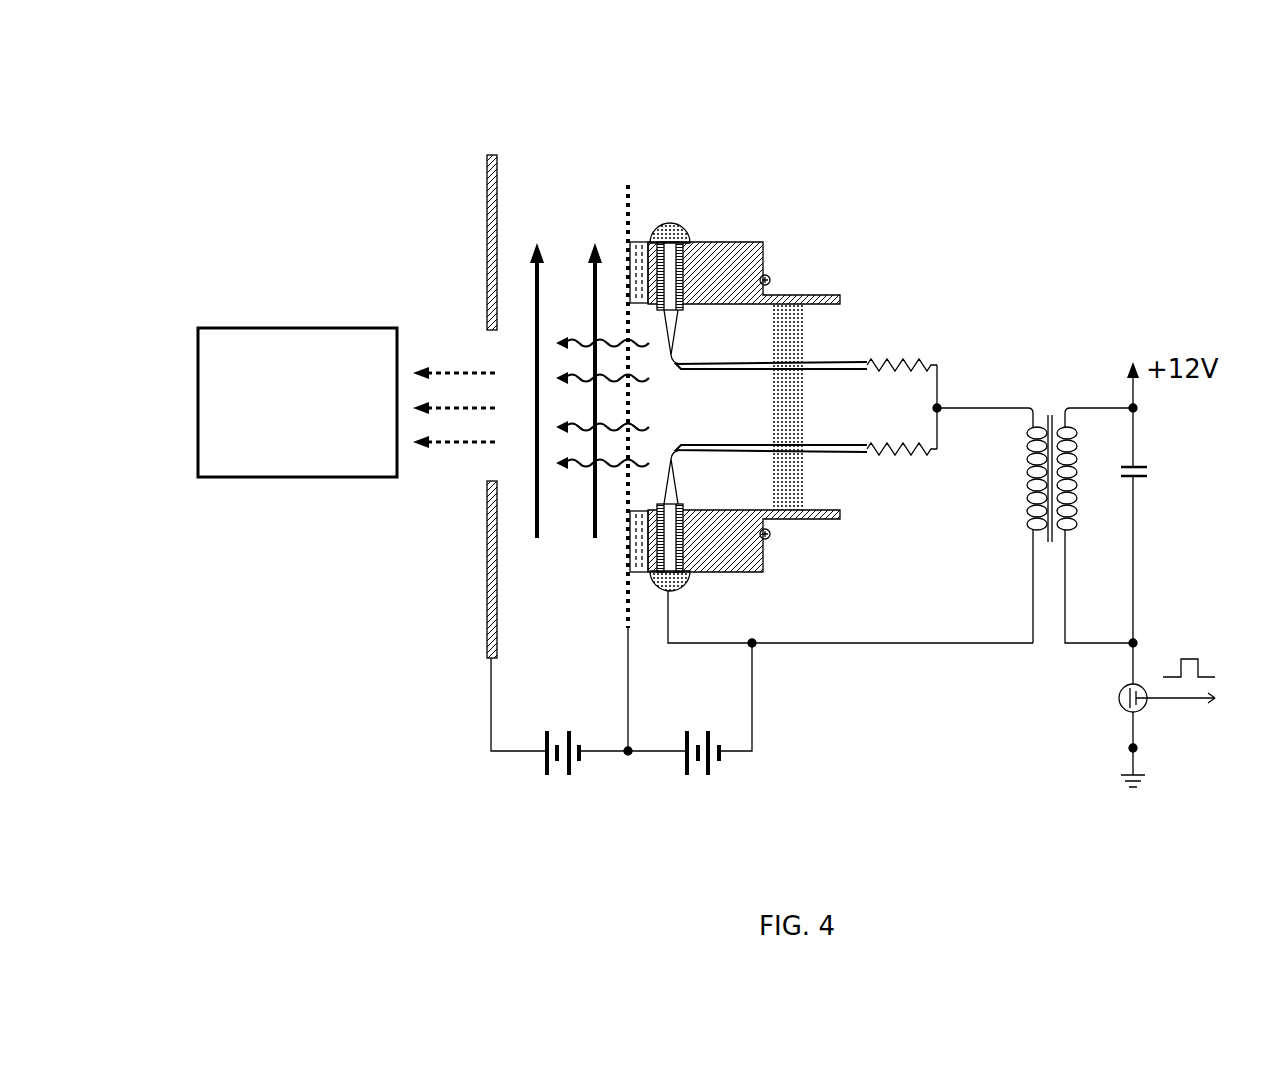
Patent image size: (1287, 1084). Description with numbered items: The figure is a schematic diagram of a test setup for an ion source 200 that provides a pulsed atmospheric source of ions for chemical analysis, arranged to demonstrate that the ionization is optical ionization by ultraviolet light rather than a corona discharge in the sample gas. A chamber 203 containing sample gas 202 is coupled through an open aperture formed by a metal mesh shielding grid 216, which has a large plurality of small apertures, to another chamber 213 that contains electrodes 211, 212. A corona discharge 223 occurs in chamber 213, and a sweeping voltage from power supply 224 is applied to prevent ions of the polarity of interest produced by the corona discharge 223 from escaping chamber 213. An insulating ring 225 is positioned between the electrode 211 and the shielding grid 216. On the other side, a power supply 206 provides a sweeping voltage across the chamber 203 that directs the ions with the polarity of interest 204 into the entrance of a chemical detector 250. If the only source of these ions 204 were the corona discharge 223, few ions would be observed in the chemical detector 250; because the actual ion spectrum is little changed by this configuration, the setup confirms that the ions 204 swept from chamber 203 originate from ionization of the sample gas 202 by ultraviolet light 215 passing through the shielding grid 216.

The ion source 200 is at (1098, 247).
The sample gas 202 is at (537, 540).
The chamber 203 is at (548, 205).
The ions with the polarity of interest 204 is at (450, 372).
The power supply 206 is at (558, 775).
The electrode 211 is at (671, 225).
The electrode 212 is at (823, 363).
The chamber 213 is at (727, 328).
The ultraviolet light 215 is at (652, 440).
The shielding grid 216 is at (625, 212).
The corona discharge 223 is at (675, 450).
The power supply 224 is at (697, 776).
The insulating ring 225 is at (644, 242).
The chemical detector 250 is at (297, 402).